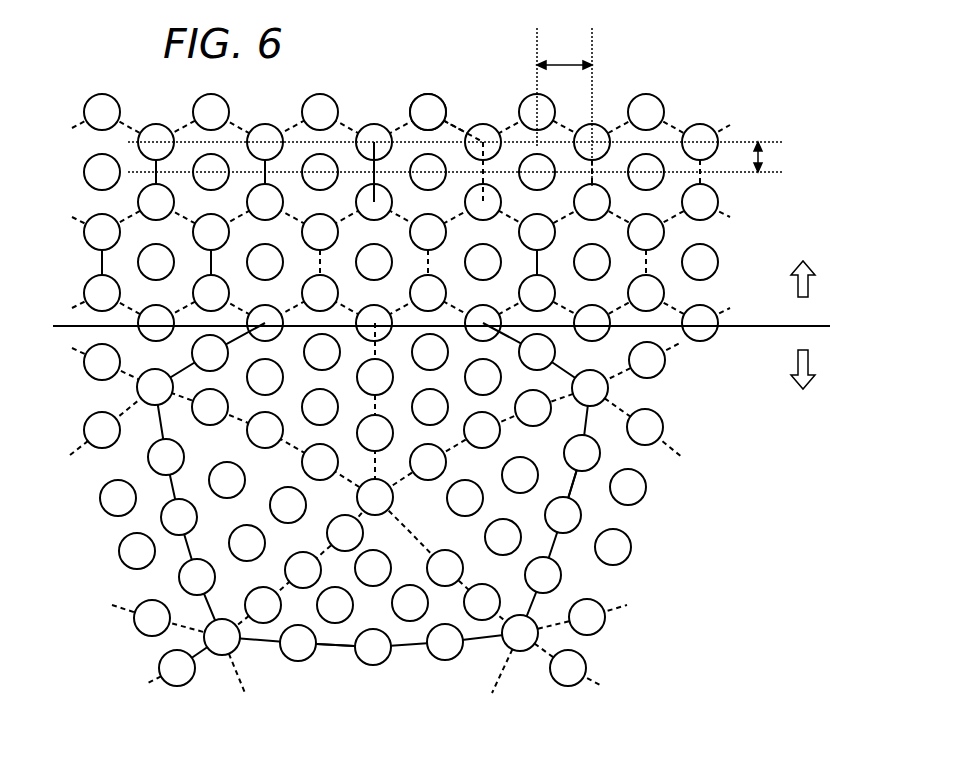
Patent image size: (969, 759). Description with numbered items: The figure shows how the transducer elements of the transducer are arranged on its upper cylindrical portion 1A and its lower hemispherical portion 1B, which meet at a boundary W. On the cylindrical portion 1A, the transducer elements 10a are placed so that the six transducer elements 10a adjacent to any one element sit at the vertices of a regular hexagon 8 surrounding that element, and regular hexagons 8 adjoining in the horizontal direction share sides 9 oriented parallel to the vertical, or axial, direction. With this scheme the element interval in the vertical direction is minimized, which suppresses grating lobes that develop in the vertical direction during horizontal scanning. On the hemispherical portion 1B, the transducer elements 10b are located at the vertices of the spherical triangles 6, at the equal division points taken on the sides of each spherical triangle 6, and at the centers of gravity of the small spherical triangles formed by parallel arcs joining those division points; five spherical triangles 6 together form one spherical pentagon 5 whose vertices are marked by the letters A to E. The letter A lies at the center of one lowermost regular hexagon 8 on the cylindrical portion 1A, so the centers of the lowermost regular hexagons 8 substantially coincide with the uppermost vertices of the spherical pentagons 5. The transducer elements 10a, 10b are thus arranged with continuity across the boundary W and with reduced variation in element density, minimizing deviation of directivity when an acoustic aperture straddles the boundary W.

The cylindrical portion 1A is at (473, 184).
The hemispherical portion 1B is at (479, 528).
The boundary W is at (426, 328).
The spherical pentagon 5 is at (573, 493).
The spherical triangle 6 is at (337, 633).
The regular hexagon 8 is at (456, 126).
The side 9 is at (484, 166).
The transducer element 10a is at (417, 97).
The transducer element 10b is at (410, 604).